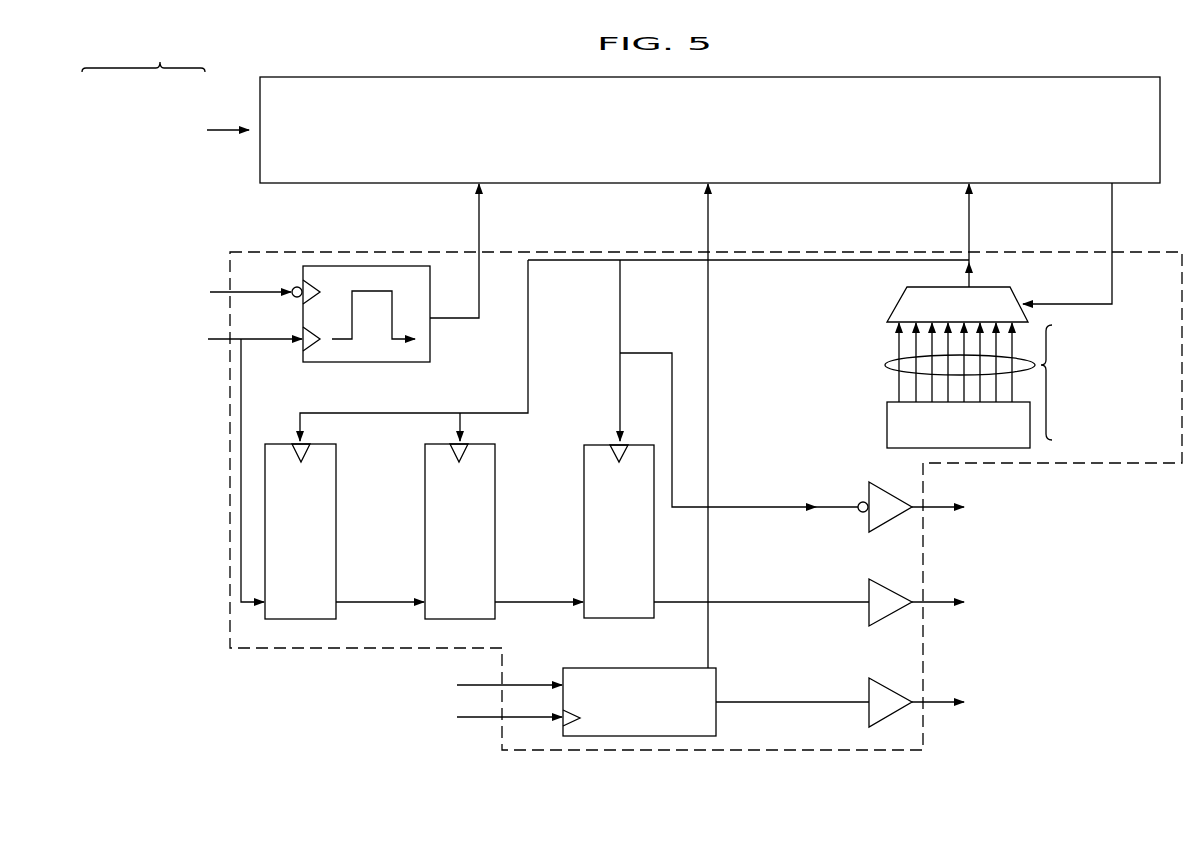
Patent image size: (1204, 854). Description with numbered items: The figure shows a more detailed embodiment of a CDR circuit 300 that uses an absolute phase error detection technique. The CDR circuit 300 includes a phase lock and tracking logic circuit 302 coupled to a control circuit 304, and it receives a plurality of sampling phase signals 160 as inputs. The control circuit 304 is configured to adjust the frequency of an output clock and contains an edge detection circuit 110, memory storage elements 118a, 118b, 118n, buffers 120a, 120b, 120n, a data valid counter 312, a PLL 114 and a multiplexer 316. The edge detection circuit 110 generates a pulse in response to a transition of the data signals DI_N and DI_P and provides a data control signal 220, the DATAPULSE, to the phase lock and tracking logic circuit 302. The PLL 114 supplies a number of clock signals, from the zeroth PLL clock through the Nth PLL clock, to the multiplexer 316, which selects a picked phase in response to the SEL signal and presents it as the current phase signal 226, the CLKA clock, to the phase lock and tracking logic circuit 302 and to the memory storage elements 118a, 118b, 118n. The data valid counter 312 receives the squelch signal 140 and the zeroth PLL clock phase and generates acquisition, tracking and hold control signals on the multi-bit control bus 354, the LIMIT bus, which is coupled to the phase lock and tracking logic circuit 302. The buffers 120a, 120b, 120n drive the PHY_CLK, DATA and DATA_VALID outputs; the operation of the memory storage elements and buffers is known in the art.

The CDR circuit 300 is at (310, 50).
The phase lock and tracking logic circuit 302 is at (690, 168).
The plurality of sampling phase signals 160 is at (165, 113).
The control circuit 304 is at (230, 264).
The edge detection circuit 110 is at (432, 347).
The data control signal 220 is at (480, 237).
The multi-bit control bus 354 is at (709, 307).
The memory storage element 118a is at (336, 507).
The memory storage element 118b is at (425, 582).
The memory storage element 118n is at (584, 565).
The data valid counter 312 is at (648, 668).
The squelch signal 140 is at (326, 691).
The buffer 120a is at (867, 518).
The buffer 120b is at (866, 620).
The buffer 120n is at (867, 712).
The current phase signal 226 is at (967, 232).
The multiplexer 316 is at (893, 300).
The PLL 114 is at (886, 422).